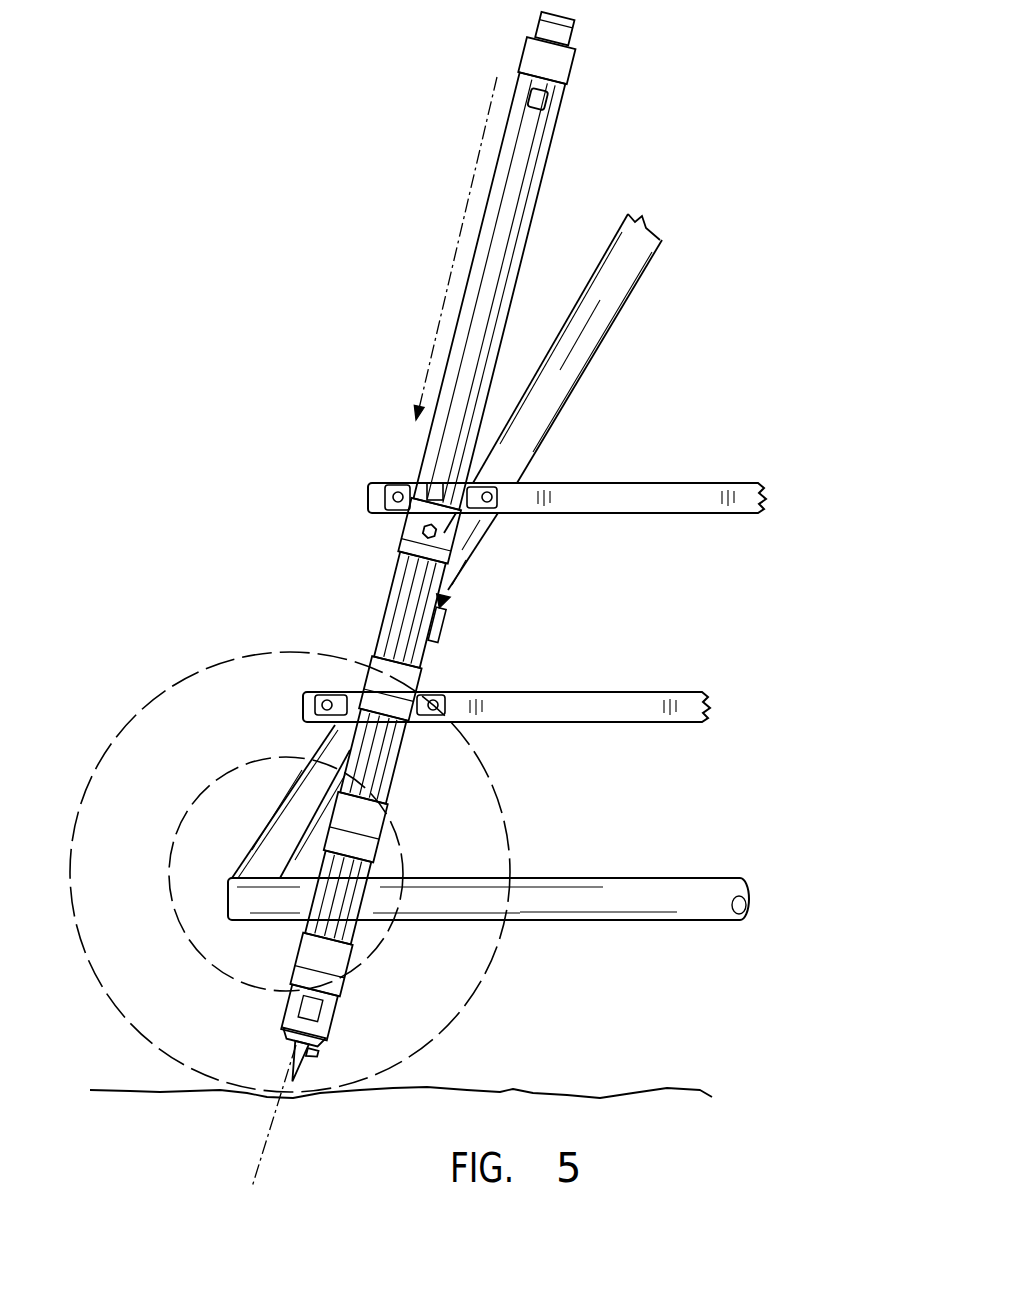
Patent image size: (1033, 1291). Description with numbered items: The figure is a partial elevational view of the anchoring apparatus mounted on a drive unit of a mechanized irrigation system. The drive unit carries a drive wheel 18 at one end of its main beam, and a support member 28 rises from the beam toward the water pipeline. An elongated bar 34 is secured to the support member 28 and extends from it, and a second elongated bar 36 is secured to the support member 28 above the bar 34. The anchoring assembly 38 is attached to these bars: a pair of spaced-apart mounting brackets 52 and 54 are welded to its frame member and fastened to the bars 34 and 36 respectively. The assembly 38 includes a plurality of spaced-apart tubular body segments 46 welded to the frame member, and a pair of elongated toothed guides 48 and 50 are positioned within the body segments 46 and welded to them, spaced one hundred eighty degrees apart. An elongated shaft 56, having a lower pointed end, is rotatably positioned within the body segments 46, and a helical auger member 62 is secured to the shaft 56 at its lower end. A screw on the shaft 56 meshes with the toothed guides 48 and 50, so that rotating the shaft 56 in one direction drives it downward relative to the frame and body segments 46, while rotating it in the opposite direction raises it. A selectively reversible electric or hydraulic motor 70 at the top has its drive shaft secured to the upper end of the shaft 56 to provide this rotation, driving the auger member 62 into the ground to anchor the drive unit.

The drive wheel 18 is at (183, 730).
The support member 28 is at (595, 318).
The elongated bar 34 is at (607, 713).
The elongated bar 36 is at (647, 490).
The anchoring assembly 38 is at (412, 275).
The tubular body segments 46 is at (380, 841).
The toothed guide 48 is at (440, 630).
The toothed guide 50 is at (398, 610).
The mounting bracket 52 is at (433, 683).
The mounting bracket 54 is at (392, 490).
The shaft 56 is at (440, 596).
The helical auger member 62 is at (312, 1043).
The reversible motor 70 is at (573, 33).